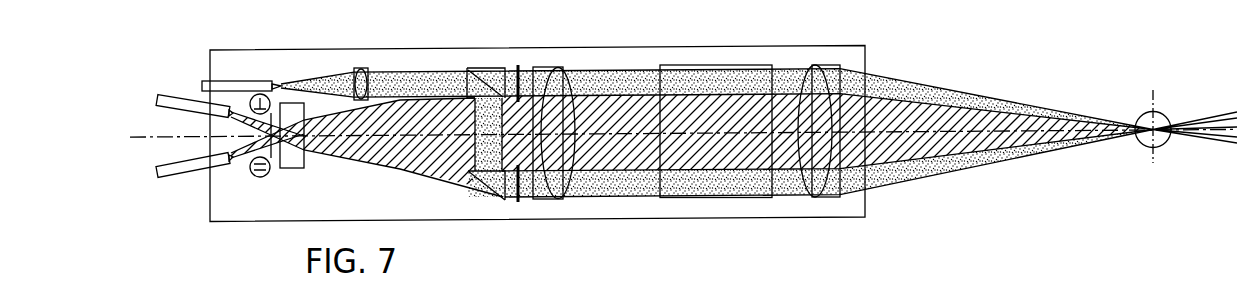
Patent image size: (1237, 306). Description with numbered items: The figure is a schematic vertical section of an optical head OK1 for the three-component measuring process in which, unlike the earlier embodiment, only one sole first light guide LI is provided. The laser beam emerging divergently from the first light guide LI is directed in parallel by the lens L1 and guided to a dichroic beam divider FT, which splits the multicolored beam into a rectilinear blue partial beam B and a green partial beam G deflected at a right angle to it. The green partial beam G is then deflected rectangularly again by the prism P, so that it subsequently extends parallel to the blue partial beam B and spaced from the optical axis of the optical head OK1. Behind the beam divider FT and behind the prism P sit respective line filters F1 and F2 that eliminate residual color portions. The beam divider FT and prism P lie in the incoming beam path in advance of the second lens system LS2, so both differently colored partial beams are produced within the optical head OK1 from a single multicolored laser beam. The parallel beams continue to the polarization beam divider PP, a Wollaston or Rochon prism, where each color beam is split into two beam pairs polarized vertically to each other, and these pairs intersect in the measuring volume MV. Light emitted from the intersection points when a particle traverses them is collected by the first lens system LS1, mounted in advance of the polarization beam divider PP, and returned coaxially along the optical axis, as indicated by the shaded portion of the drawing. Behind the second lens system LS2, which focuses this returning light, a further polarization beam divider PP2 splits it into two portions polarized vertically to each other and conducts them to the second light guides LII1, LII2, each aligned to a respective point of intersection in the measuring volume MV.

The first light guide LI is at (203, 80).
The second light guide LII1 is at (162, 94).
The second light guide LII2 is at (163, 178).
The polarization beam divider PP2 is at (292, 168).
The lens L1 is at (358, 68).
The dichroic beam divider FT is at (490, 68).
The line filter F1 is at (521, 64).
The line filter F2 is at (519, 201).
The blue partial beam B is at (611, 72).
The optical head OK1 is at (686, 53).
The green partial beam G is at (470, 144).
The prism P is at (487, 188).
The second lens system LS2 is at (562, 157).
The polarization beam divider PP is at (725, 160).
The first lens system LS1 is at (813, 160).
The measuring volume MV is at (1161, 110).